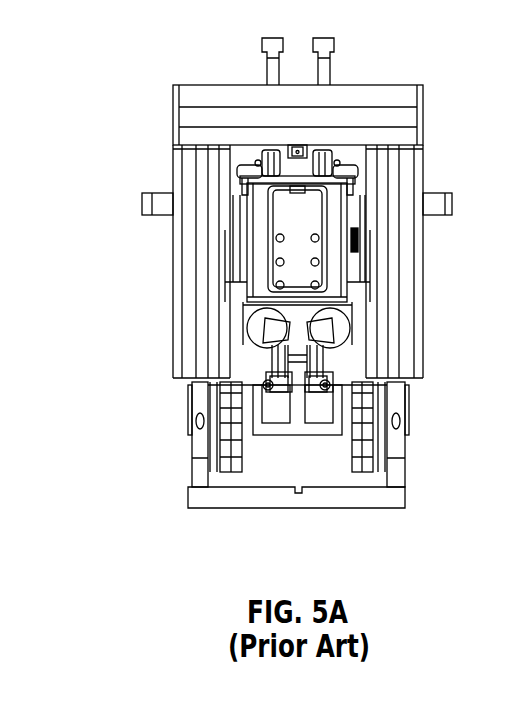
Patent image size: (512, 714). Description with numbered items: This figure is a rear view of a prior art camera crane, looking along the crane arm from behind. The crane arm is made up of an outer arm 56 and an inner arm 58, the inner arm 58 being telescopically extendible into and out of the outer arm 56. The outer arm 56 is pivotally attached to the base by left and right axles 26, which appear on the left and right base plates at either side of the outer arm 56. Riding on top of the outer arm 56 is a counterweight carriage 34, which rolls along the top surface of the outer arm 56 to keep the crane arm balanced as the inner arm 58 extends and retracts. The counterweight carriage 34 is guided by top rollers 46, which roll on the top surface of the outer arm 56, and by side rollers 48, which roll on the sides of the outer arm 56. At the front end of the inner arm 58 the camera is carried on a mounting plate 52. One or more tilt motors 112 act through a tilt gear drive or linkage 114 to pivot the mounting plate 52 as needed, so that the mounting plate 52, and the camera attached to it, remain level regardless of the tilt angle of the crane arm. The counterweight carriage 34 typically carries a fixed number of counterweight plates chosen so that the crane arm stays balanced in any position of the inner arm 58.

The counterweight carriage 34 is at (355, 92).
The top rollers 46 is at (275, 153).
The side rollers 48 is at (255, 173).
The outer arm 56 is at (335, 178).
The inner arm 58 is at (285, 228).
The axles 26 is at (363, 237).
The tilt motors 112 is at (352, 330).
The tilt gear drive or linkage 114 is at (330, 386).
The mounting plate 52 is at (345, 505).